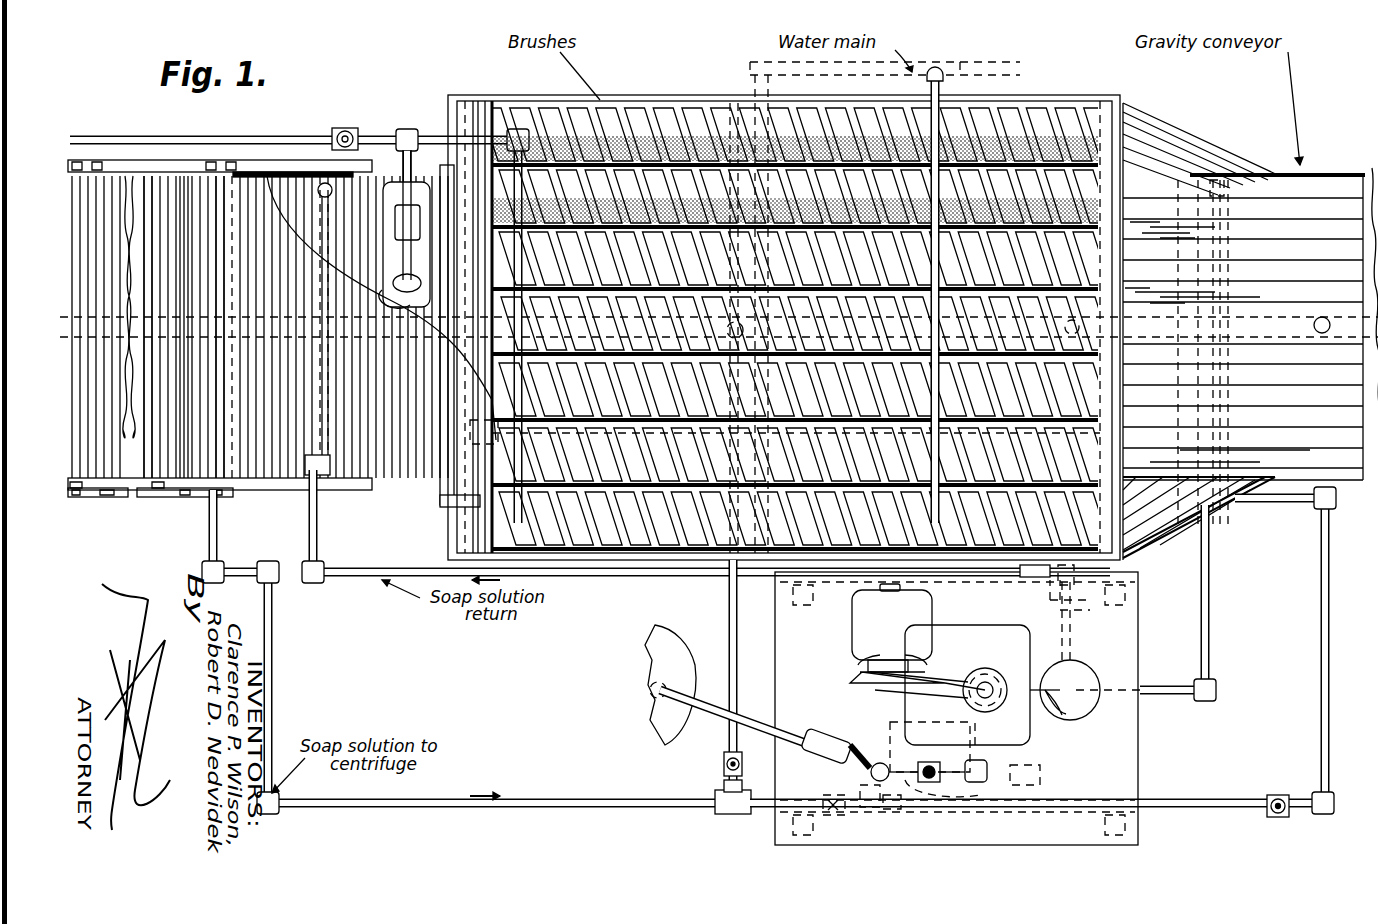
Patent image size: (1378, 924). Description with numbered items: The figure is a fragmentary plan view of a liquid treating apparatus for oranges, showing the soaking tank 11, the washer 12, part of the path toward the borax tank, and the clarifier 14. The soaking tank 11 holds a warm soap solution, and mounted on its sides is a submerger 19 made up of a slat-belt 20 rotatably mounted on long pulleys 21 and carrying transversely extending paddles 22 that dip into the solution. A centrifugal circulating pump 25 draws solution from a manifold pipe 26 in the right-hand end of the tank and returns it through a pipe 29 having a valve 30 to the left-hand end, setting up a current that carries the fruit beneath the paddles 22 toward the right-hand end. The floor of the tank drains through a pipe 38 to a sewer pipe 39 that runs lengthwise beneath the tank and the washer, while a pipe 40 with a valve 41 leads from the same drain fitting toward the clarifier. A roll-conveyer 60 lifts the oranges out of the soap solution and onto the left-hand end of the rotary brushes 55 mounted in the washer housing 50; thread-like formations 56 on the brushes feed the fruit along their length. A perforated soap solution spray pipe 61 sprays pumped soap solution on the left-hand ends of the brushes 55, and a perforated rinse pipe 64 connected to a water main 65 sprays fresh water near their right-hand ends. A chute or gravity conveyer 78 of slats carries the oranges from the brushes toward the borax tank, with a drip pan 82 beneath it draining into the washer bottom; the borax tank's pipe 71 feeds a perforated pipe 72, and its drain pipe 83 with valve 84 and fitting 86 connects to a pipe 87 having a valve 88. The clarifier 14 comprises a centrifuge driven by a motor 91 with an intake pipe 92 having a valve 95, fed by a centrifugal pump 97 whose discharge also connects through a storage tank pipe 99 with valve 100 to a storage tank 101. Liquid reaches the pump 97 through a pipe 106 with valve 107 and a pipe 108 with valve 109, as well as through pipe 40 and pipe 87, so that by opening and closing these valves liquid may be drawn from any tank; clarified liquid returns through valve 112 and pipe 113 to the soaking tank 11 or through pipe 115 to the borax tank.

The soaking tank 11 is at (300, 168).
The washer 12 is at (560, 115).
The clarifier 14 is at (988, 672).
The submerger 19 is at (185, 178).
The slat-belt 20 is at (150, 178).
The long pulleys 21 is at (220, 178).
The paddles 22 is at (122, 178).
The centrifugal circulating pump 25 is at (395, 283).
The manifold pipe 26 is at (316, 190).
The pipe 29 is at (302, 134).
The valve 30 is at (348, 126).
The pipe 38 is at (118, 492).
The sewer pipe 39 is at (1258, 328).
The pipe 40 is at (205, 540).
The valve 41 is at (168, 492).
The housing 50 is at (755, 105).
The rotary brushes 55 is at (690, 108).
The thread-like formations 56 is at (645, 112).
The roll-conveyer 60 is at (420, 462).
The perforated soap solution spray pipe 61 is at (515, 205).
The perforated rinse pipe 64 is at (940, 112).
The water main 65 is at (968, 60).
The pipe 71 is at (1272, 505).
The perforated pipe 72 is at (1225, 210).
The chute or gravity conveyer 78 is at (1165, 145).
The drip pan 82 is at (1195, 540).
The drain pipe 83 is at (1320, 705).
The valve 84 is at (1322, 318).
The fitting 86 is at (1318, 814).
The pipe 87 is at (1180, 800).
The valve 88 is at (1278, 794).
The motor 91 is at (860, 633).
The intake pipe 92 is at (990, 772).
The valve 95 is at (930, 760).
The centrifugal pump 97 is at (937, 762).
The storage tank pipe 99 is at (752, 722).
The valve 100 is at (814, 735).
The storage tank 101 is at (660, 668).
The pipe 106 is at (728, 614).
The valve 107 is at (722, 764).
The pipe 108 is at (762, 812).
The valve 109 is at (838, 818).
The valve 112 is at (1030, 576).
The pipe 113 is at (658, 572).
The pipe 115 is at (1160, 688).